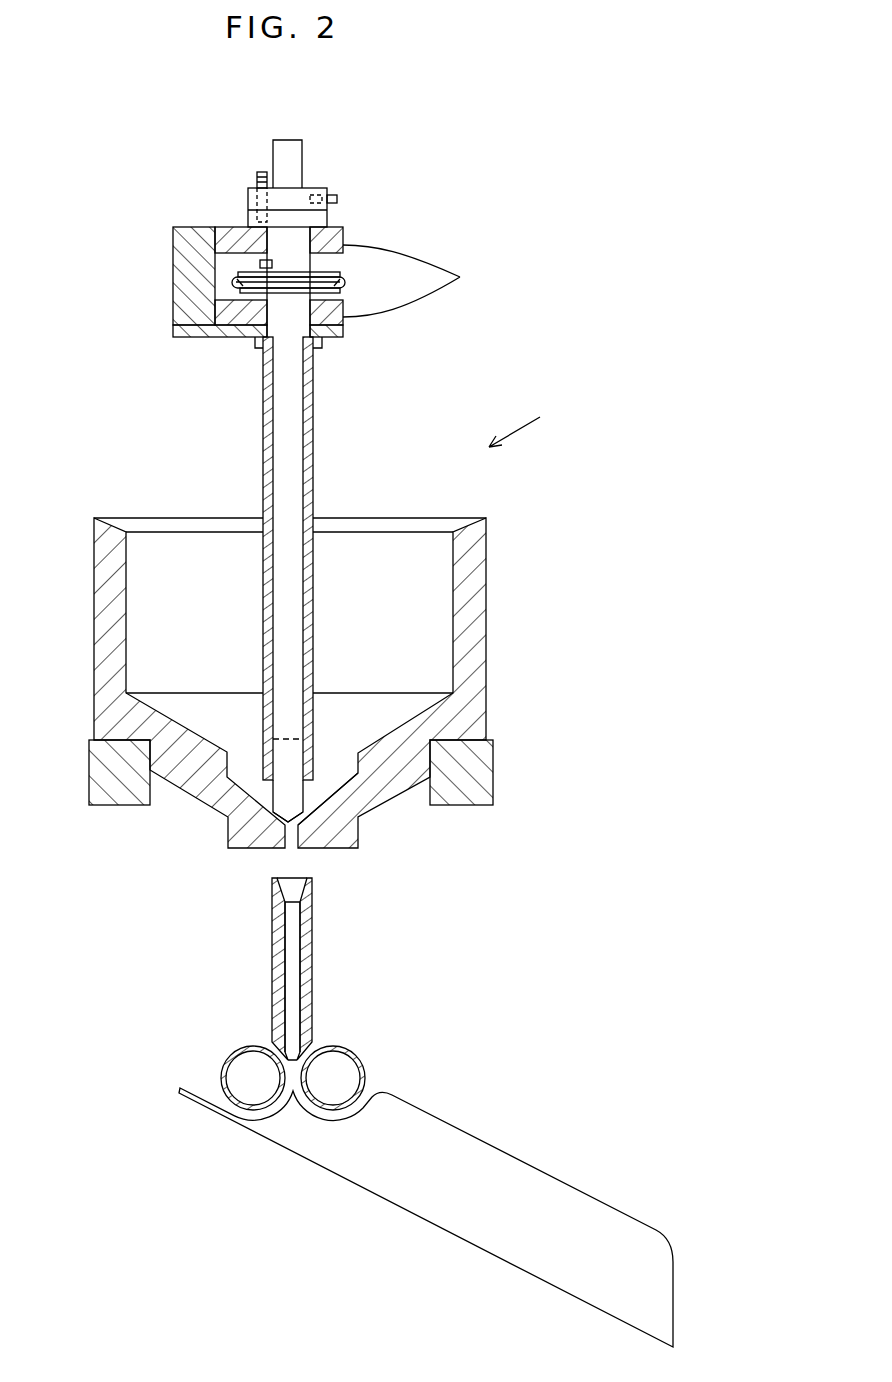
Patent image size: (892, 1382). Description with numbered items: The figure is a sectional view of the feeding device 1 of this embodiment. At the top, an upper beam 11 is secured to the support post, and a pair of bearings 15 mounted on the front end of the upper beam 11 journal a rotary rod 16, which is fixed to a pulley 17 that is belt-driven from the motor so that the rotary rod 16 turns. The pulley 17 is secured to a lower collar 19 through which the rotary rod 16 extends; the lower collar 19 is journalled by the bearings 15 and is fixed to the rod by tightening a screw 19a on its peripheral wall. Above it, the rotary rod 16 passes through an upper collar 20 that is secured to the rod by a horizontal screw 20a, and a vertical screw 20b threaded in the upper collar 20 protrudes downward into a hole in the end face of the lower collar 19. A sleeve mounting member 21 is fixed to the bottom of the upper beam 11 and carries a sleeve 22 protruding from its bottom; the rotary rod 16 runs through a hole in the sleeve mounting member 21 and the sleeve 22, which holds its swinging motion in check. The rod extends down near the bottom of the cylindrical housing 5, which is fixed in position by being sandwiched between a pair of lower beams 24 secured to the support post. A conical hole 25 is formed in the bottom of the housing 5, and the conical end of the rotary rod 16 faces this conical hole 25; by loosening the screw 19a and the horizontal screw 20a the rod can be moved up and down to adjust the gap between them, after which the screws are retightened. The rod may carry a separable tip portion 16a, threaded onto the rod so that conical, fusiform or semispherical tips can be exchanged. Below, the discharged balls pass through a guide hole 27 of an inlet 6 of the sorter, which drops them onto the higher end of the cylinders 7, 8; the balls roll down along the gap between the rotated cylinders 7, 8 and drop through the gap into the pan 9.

The feeding device 1 is at (529, 421).
The housing 5 is at (328, 688).
The inlet 6 is at (291, 969).
The cylinder 7 is at (357, 1055).
The cylinder 8 is at (232, 1055).
The pan 9 is at (497, 1142).
The upper beam 11 is at (193, 224).
The bearings 15 is at (424, 281).
The rotary rod 16 is at (295, 147).
The tip portion 16a is at (285, 787).
The pulley 17 is at (345, 270).
The lower collar 19 is at (327, 217).
The screw 19a is at (260, 264).
The upper collar 20 is at (317, 187).
The horizontal screw 20a is at (338, 199).
The vertical screw 20b is at (260, 172).
The sleeve mounting member 21 is at (197, 340).
The sleeve 22 is at (263, 436).
The lower beams 24 is at (470, 848).
The conical hole 25 is at (323, 805).
The guide hole 27 is at (287, 928).